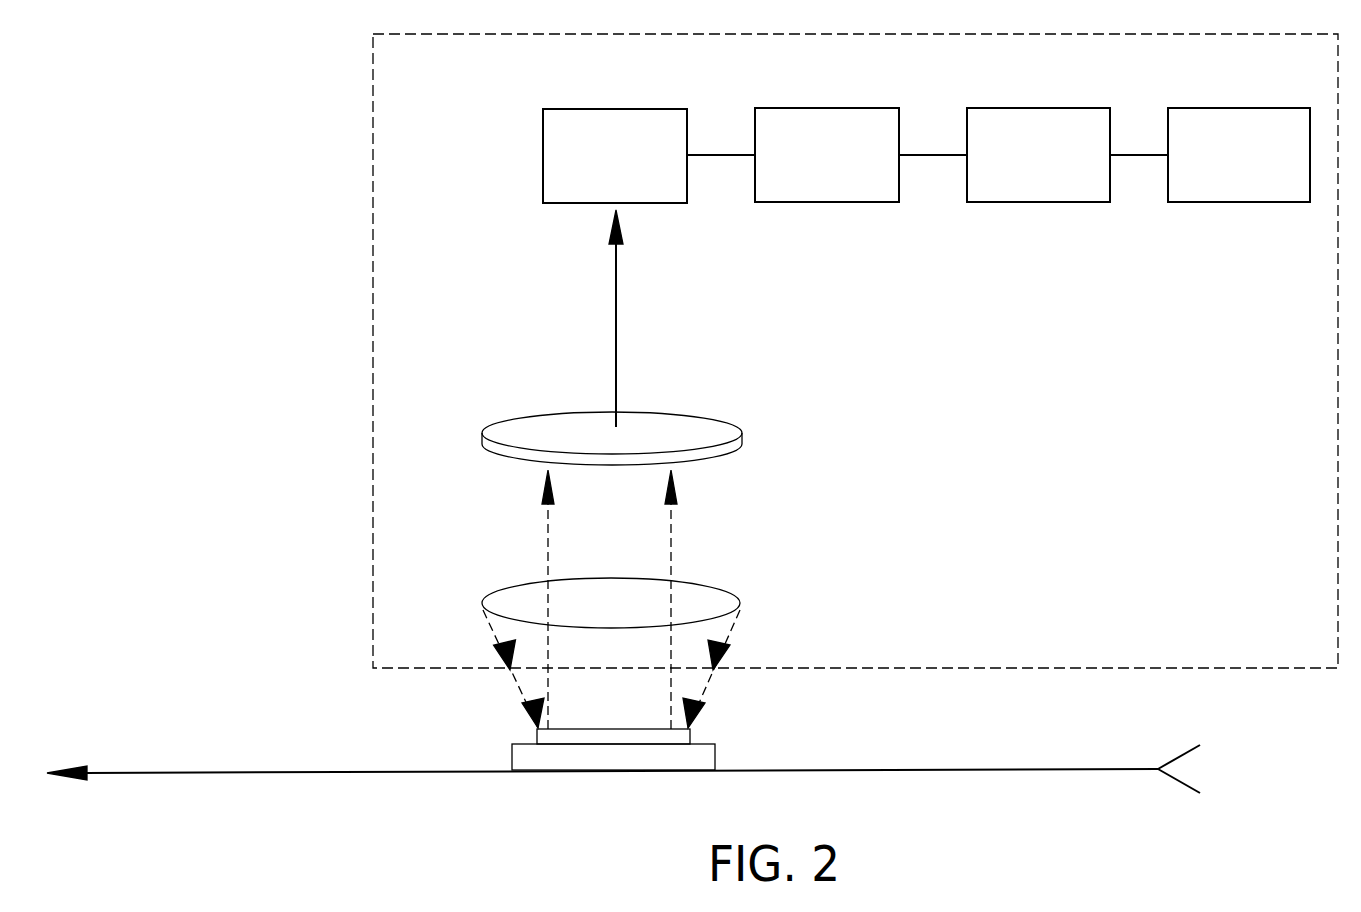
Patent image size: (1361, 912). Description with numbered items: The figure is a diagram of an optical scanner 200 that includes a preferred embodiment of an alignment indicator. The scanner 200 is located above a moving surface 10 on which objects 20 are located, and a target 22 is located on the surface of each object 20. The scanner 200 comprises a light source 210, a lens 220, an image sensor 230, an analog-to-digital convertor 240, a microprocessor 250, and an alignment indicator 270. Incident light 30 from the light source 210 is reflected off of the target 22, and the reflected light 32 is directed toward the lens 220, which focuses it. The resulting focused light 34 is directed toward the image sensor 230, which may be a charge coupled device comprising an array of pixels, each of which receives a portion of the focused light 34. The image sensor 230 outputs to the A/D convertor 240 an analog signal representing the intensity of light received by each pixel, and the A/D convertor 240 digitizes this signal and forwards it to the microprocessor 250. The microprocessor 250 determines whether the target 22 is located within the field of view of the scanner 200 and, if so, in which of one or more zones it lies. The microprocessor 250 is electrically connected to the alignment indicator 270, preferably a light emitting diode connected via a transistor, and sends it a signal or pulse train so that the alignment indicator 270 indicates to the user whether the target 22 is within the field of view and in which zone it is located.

The moving surface 10 is at (1045, 770).
The object 20 is at (716, 758).
The target 22 is at (690, 735).
The incident light 30 is at (738, 626).
The reflected light 32 is at (672, 553).
The focused light 34 is at (617, 345).
The optical scanner 200 is at (855, 351).
The light source 210 is at (730, 597).
The lens 220 is at (712, 413).
The image sensor 230 is at (688, 120).
The analog-to-digital (A/D) convertor 240 is at (830, 108).
The microprocessor 250 is at (1025, 108).
The alignment indicator 270 is at (1232, 108).